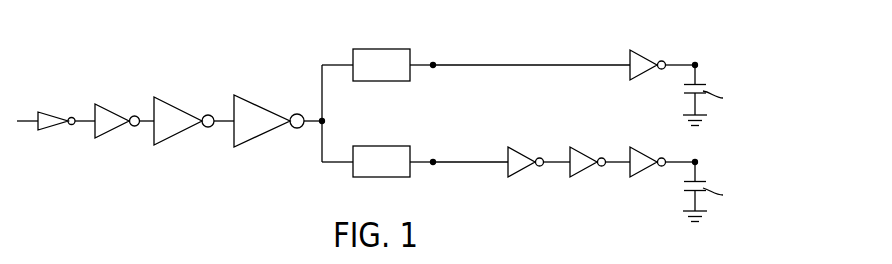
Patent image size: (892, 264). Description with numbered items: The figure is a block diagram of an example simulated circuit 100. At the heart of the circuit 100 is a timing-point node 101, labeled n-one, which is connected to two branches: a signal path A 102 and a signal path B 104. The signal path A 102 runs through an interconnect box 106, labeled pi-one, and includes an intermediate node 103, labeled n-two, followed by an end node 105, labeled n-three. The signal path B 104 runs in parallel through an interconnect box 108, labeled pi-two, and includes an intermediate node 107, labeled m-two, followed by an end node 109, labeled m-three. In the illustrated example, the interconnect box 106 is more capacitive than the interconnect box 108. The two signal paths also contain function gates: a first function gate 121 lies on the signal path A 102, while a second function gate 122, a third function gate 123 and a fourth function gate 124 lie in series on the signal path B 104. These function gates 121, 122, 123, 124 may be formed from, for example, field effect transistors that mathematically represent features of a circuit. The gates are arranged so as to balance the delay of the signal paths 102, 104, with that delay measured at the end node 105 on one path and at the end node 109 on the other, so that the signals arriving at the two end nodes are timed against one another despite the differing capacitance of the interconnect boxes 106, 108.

The simulated circuit 100 is at (127, 46).
The node n1 101 is at (323, 121).
The signal path A 102 is at (489, 63).
The node n2 103 is at (434, 62).
The signal path B 104 is at (482, 165).
The node n3 105 is at (696, 66).
The interconnect box 106 is at (378, 49).
The node m2 107 is at (433, 165).
The interconnect box 108 is at (376, 145).
The node m3 109 is at (696, 163).
The function gate G1 121 is at (637, 50).
The function gate G2 122 is at (520, 147).
The function gate G3 123 is at (582, 147).
The function gate G4 124 is at (638, 147).